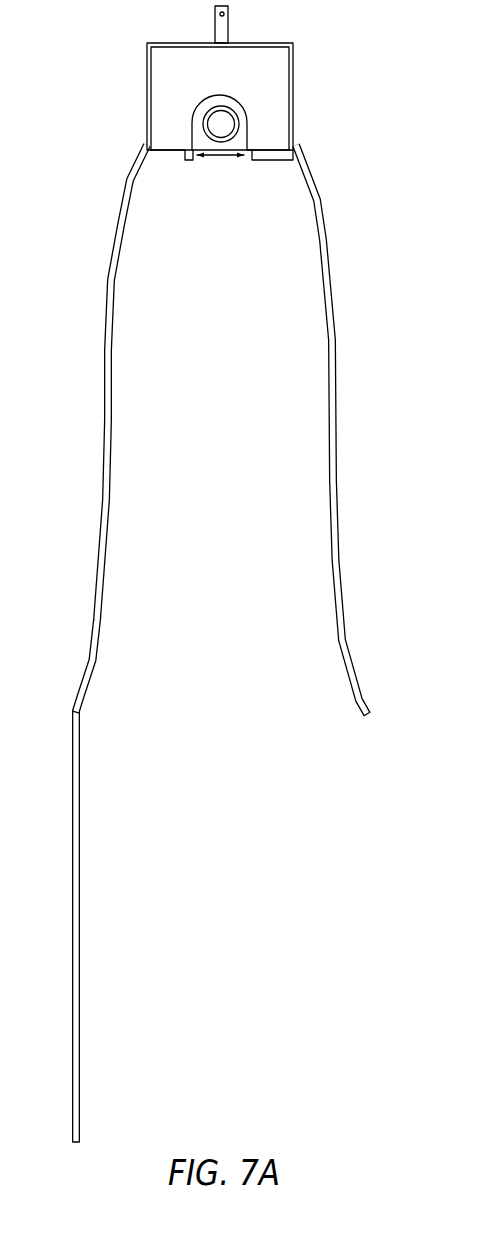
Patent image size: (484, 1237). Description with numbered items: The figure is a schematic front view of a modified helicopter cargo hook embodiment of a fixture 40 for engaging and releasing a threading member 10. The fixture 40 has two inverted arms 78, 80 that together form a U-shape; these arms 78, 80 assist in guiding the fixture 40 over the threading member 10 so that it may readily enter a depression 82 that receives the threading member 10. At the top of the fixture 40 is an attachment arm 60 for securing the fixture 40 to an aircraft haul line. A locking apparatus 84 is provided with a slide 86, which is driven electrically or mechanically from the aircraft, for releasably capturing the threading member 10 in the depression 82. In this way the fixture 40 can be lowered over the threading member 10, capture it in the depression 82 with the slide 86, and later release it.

The fixture 40 is at (88, 217).
The attachment arm 60 is at (228, 27).
The locking apparatus 84 is at (282, 80).
The depression 82 is at (192, 117).
The threading member 10 is at (240, 115).
The slide 86 is at (276, 161).
The arm 78 is at (108, 275).
The arm 80 is at (331, 244).